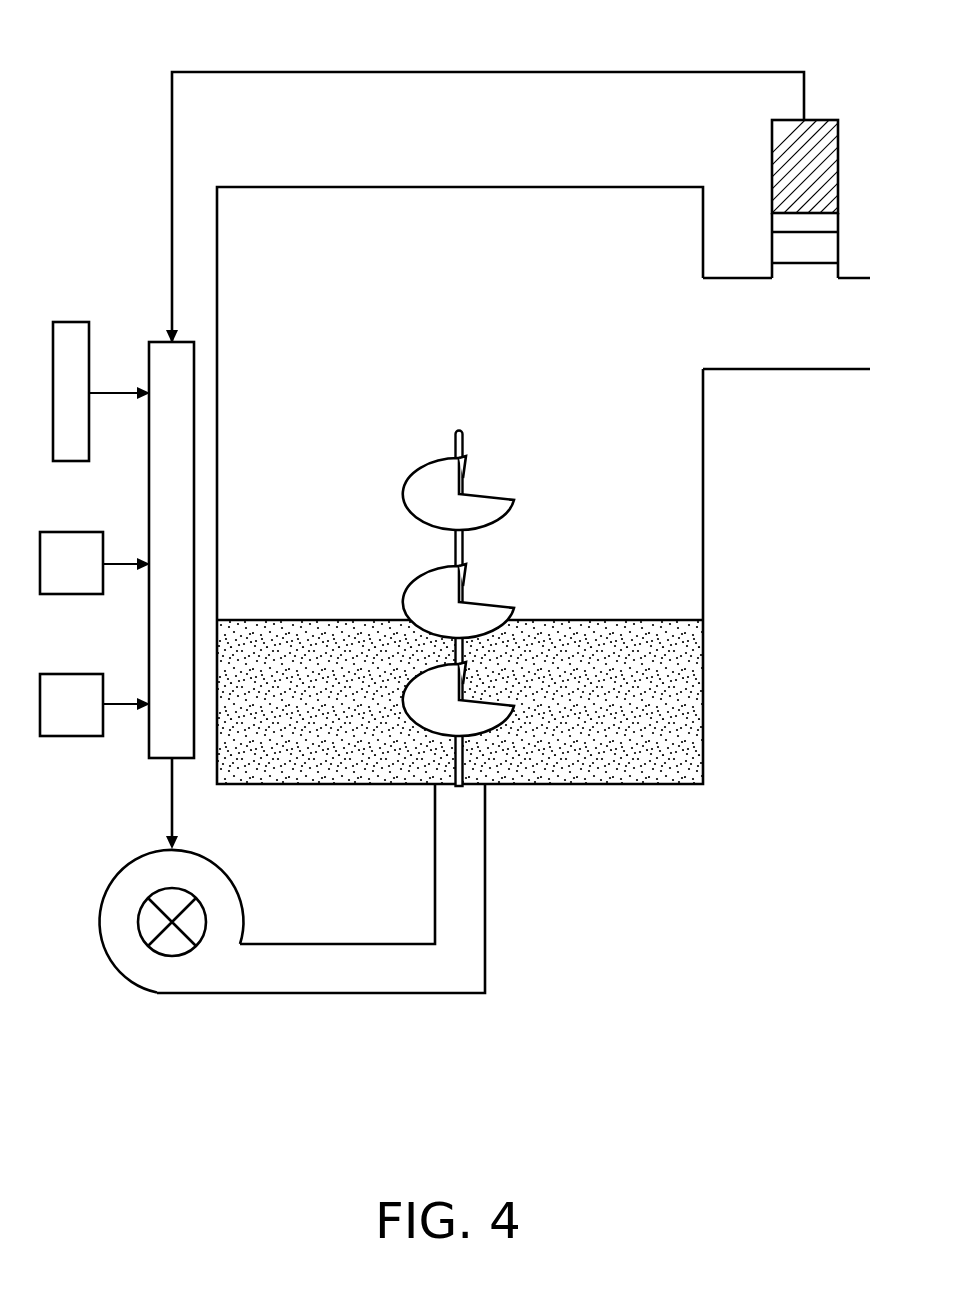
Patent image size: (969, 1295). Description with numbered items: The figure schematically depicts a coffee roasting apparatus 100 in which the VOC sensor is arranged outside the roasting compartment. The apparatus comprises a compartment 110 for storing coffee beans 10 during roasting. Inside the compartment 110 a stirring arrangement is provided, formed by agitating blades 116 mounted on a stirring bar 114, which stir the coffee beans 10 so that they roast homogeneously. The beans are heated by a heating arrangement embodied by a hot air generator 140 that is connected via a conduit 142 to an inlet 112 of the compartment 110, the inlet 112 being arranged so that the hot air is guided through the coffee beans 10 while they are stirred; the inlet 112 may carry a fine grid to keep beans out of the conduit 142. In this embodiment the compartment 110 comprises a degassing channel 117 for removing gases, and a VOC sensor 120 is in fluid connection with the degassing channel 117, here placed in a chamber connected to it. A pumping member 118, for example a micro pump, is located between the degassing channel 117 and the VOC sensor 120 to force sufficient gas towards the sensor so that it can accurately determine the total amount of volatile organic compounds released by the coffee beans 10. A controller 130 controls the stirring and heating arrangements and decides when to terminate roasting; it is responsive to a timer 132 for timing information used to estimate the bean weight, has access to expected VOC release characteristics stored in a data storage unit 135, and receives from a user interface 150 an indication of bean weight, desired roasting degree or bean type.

The coffee roasting apparatus 100 is at (98, 86).
The coffee beans 10 is at (688, 698).
The compartment 110 is at (688, 516).
The inlet 112 is at (468, 786).
The stirring bar 114 is at (465, 438).
The agitating blades 116 is at (514, 509).
The degassing channel 117 is at (806, 355).
The pumping member 118 is at (805, 248).
The VOC sensor 120 is at (778, 154).
The controller 130 is at (149, 505).
The timer 132 is at (72, 596).
The data storage unit 135 is at (72, 738).
The hot air generator 140 is at (172, 982).
The conduit 142 is at (337, 982).
The user interface 150 is at (68, 320).